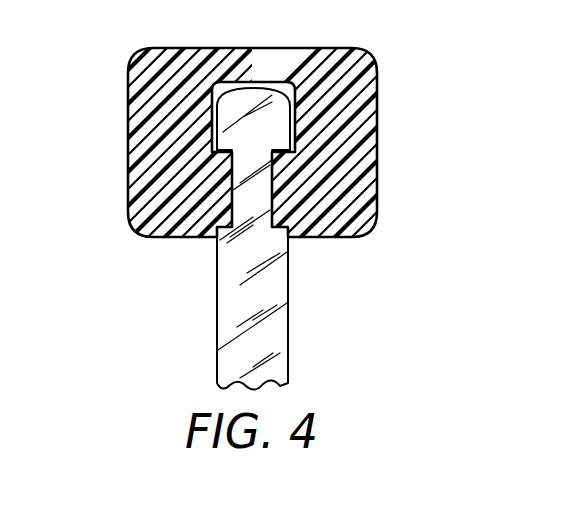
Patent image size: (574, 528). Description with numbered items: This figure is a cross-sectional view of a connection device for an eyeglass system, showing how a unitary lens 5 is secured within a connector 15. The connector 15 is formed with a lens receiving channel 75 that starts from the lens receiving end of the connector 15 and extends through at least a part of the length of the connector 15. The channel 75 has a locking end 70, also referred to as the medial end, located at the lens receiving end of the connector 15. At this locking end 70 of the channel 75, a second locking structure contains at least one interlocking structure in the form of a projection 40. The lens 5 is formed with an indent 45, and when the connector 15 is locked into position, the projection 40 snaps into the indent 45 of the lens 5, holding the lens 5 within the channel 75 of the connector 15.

The locking end 70 is at (424, 62).
The connector 15 is at (128, 113).
The indent 45 is at (238, 176).
The projection 40 is at (272, 188).
The unitary lens 5 is at (218, 283).
The lens receiving channel 75 is at (287, 238).